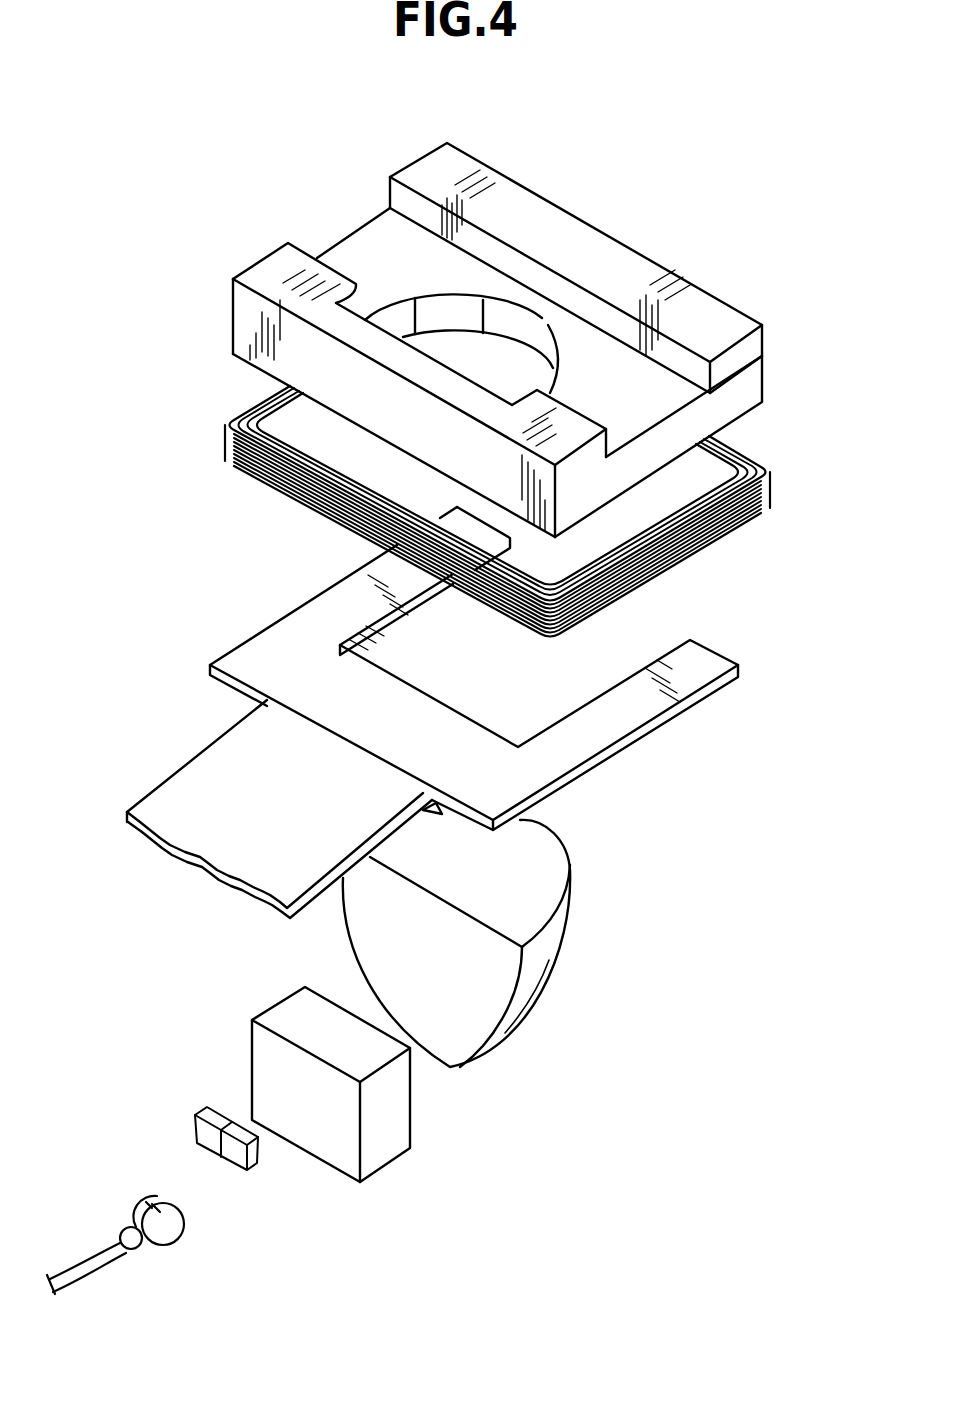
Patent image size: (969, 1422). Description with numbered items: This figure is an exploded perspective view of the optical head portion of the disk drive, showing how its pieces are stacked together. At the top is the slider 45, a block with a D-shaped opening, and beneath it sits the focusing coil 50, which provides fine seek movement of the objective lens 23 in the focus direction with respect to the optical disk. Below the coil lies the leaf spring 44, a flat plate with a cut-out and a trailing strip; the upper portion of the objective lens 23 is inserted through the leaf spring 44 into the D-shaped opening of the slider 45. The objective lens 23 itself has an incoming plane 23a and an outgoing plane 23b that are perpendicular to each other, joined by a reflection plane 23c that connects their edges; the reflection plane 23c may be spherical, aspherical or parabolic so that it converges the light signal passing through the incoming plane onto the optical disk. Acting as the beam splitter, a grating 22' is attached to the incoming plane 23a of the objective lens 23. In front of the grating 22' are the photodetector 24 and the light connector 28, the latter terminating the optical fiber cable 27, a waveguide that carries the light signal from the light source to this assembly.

The slider 45 is at (678, 262).
The focusing coil 50 is at (770, 466).
The leaf spring 44 is at (597, 732).
The objective lens 23 is at (573, 952).
The incoming plane 23a is at (447, 1007).
The outgoing plane 23b is at (517, 880).
The reflection plane 23c is at (527, 987).
The grating 22' is at (367, 1104).
The photodetector 24 is at (193, 1127).
The optical fiber cable 27 is at (90, 1279).
The light connector 28 is at (172, 1245).